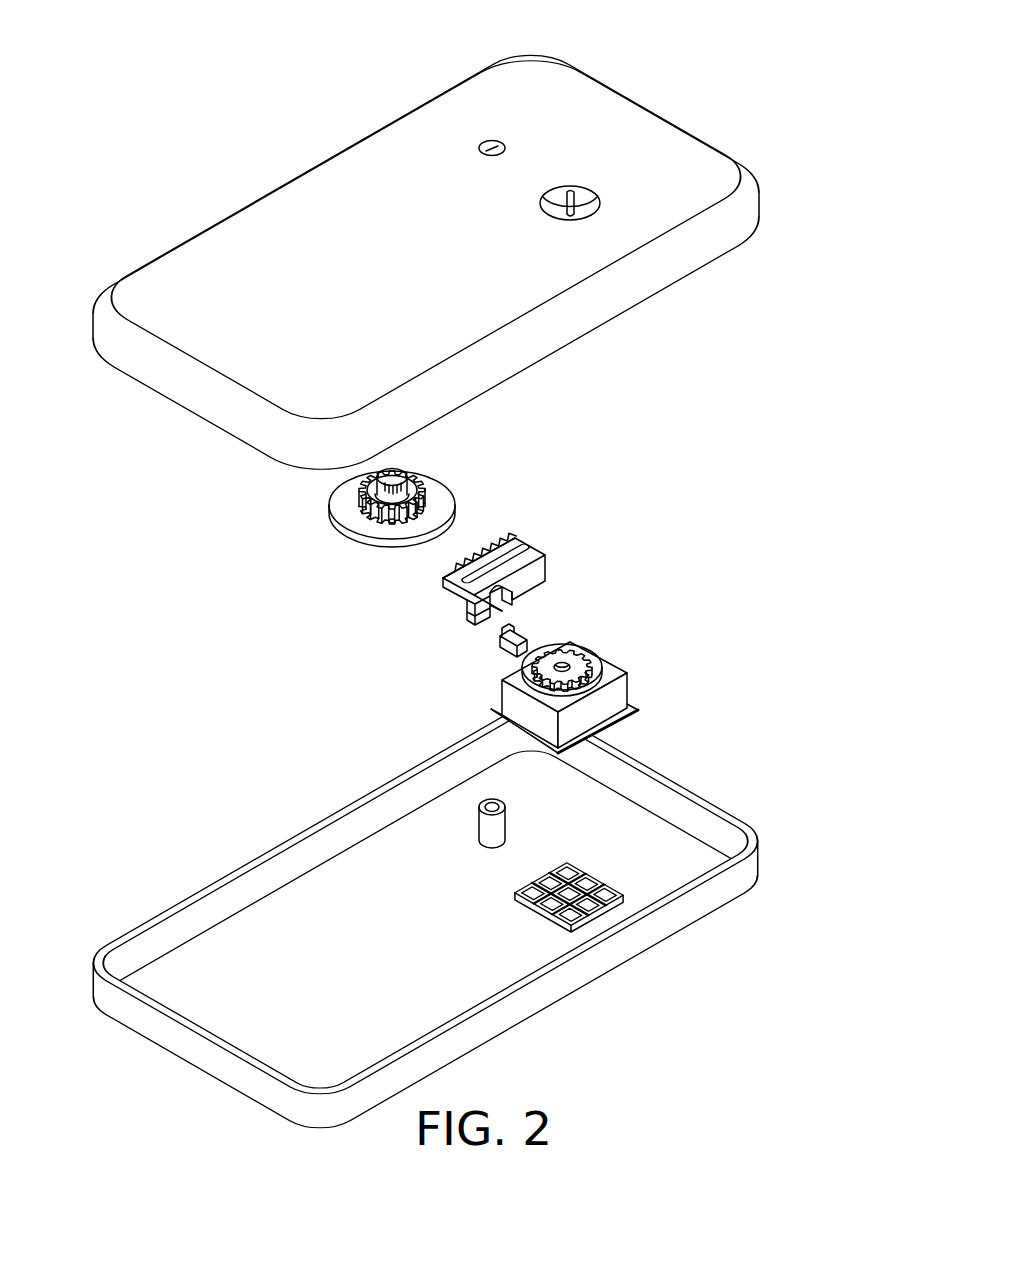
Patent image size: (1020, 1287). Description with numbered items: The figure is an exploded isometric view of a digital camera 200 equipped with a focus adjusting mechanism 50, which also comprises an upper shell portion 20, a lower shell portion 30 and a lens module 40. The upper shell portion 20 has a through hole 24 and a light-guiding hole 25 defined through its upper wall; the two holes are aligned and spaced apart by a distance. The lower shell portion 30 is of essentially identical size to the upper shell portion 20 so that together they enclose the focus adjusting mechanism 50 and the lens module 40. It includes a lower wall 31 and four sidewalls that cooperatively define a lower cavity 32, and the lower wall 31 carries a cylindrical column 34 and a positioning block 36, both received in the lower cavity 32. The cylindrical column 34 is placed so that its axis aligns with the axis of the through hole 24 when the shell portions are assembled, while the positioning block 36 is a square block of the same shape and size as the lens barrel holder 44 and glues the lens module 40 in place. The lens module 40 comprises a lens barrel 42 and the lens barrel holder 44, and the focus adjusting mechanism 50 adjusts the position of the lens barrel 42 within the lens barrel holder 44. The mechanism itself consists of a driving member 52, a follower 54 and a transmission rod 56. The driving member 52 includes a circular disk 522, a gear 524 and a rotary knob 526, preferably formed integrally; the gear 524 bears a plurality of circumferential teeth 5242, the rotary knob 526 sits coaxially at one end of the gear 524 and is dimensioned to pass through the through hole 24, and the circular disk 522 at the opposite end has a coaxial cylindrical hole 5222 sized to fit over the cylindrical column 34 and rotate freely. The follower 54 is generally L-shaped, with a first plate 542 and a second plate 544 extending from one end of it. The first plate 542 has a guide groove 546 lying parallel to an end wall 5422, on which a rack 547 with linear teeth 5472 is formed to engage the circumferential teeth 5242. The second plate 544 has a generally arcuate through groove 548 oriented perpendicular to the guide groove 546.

The digital camera 200 is at (472, 40).
The upper shell portion 20 is at (426, 265).
The through hole 24 is at (487, 141).
The light-guiding hole 25 is at (560, 202).
The lower shell portion 30 is at (426, 919).
The lower wall 31 is at (480, 968).
The lower cavity 32 is at (610, 820).
The cylindrical column 34 is at (488, 830).
The positioning block 36 is at (602, 912).
The lens module 40 is at (584, 695).
The lens barrel 42 is at (517, 665).
The lens barrel holder 44 is at (622, 690).
The focus adjusting mechanism 50 is at (477, 555).
The driving member 52 is at (445, 509).
The circular disk 522 is at (354, 532).
The cylindrical hole 5222 is at (392, 521).
The gear 524 is at (332, 502).
The circumferential teeth 5242 is at (358, 491).
The rotary knob 526 is at (404, 467).
The follower 54 is at (509, 577).
The first plate 542 is at (483, 616).
The second plate 544 is at (488, 623).
The guide groove 546 is at (470, 589).
The rack 547 is at (442, 549).
The linear teeth 5472 is at (480, 560).
The through groove 548 is at (509, 608).
The end wall 5422 is at (520, 548).
The transmission rod 56 is at (575, 627).